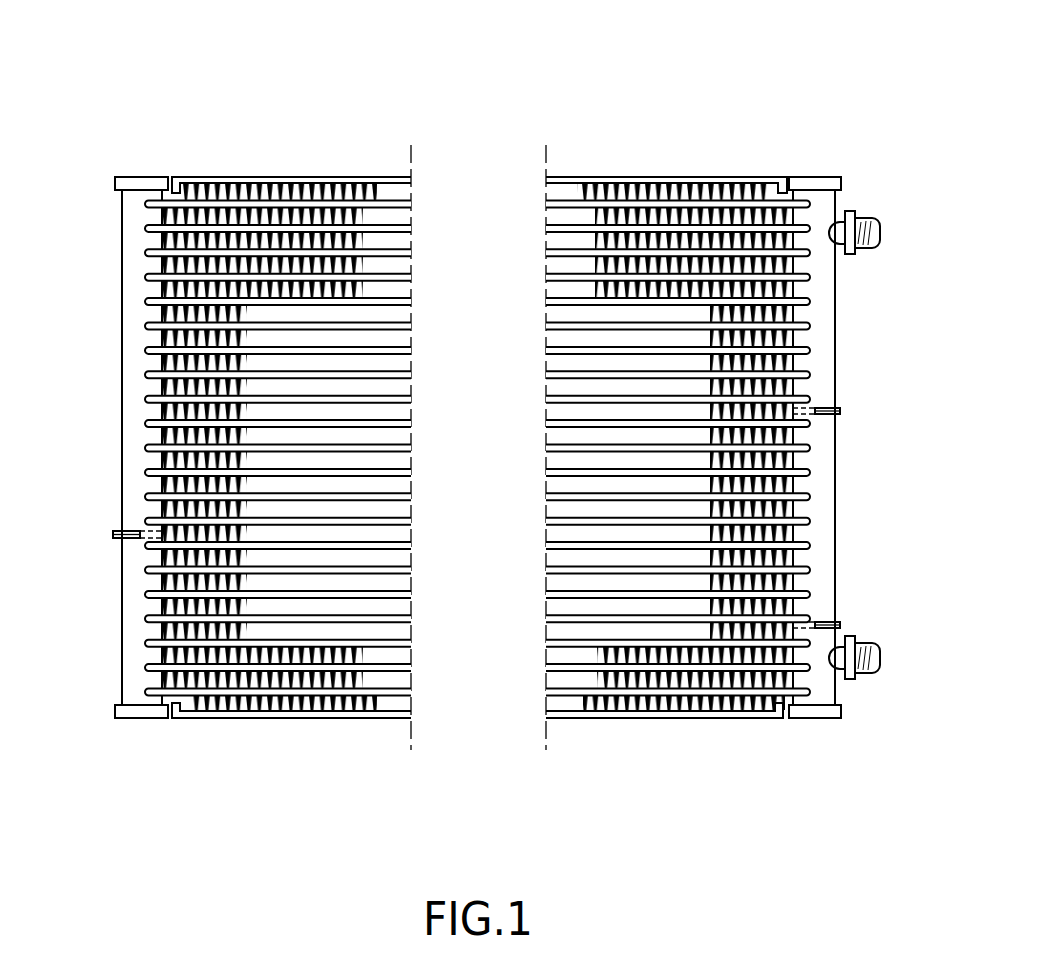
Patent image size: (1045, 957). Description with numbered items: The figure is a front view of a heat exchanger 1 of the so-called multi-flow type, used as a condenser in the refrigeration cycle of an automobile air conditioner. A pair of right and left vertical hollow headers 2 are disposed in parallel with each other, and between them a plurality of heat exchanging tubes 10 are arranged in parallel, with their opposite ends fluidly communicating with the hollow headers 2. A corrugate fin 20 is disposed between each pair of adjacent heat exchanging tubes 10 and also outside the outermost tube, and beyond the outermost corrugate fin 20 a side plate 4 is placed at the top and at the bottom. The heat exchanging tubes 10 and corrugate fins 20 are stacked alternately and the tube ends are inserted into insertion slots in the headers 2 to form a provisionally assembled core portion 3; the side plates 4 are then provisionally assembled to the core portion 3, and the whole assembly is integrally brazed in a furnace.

The heat exchanger 1 is at (783, 110).
The hollow header 2 is at (135, 280).
The core portion 3 is at (546, 265).
The side plate 4 is at (290, 180).
The heat exchanging tube 10 is at (560, 325).
The corrugate fin 20 is at (655, 180).